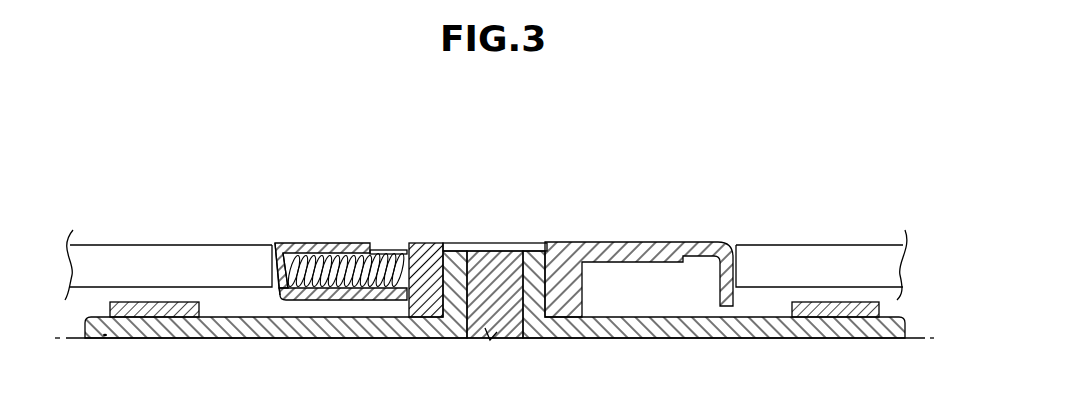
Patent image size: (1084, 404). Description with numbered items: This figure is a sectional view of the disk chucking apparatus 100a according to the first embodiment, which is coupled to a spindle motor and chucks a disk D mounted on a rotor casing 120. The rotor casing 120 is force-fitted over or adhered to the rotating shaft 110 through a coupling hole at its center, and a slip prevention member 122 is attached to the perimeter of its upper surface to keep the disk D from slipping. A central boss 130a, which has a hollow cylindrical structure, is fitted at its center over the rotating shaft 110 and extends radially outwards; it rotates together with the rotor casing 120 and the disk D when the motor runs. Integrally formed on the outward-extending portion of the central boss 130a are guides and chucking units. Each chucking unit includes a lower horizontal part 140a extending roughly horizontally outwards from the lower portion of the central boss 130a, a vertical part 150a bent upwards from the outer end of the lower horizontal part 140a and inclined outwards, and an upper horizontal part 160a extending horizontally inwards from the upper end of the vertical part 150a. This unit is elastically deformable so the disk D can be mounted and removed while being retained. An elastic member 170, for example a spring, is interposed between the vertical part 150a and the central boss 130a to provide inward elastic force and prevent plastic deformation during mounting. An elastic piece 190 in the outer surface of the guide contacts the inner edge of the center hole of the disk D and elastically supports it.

The disk chucking apparatus 100a is at (216, 135).
The disk D is at (138, 263).
The rotating shaft 110 is at (498, 263).
The rotor casing 120 is at (270, 325).
The slip prevention member 122 is at (158, 312).
The central boss 130a is at (425, 256).
The lower horizontal part 140a is at (340, 297).
The vertical part 150a is at (277, 273).
The upper horizontal part 160a is at (332, 252).
The elastic member 170 is at (395, 257).
The elastic piece 190 is at (722, 250).